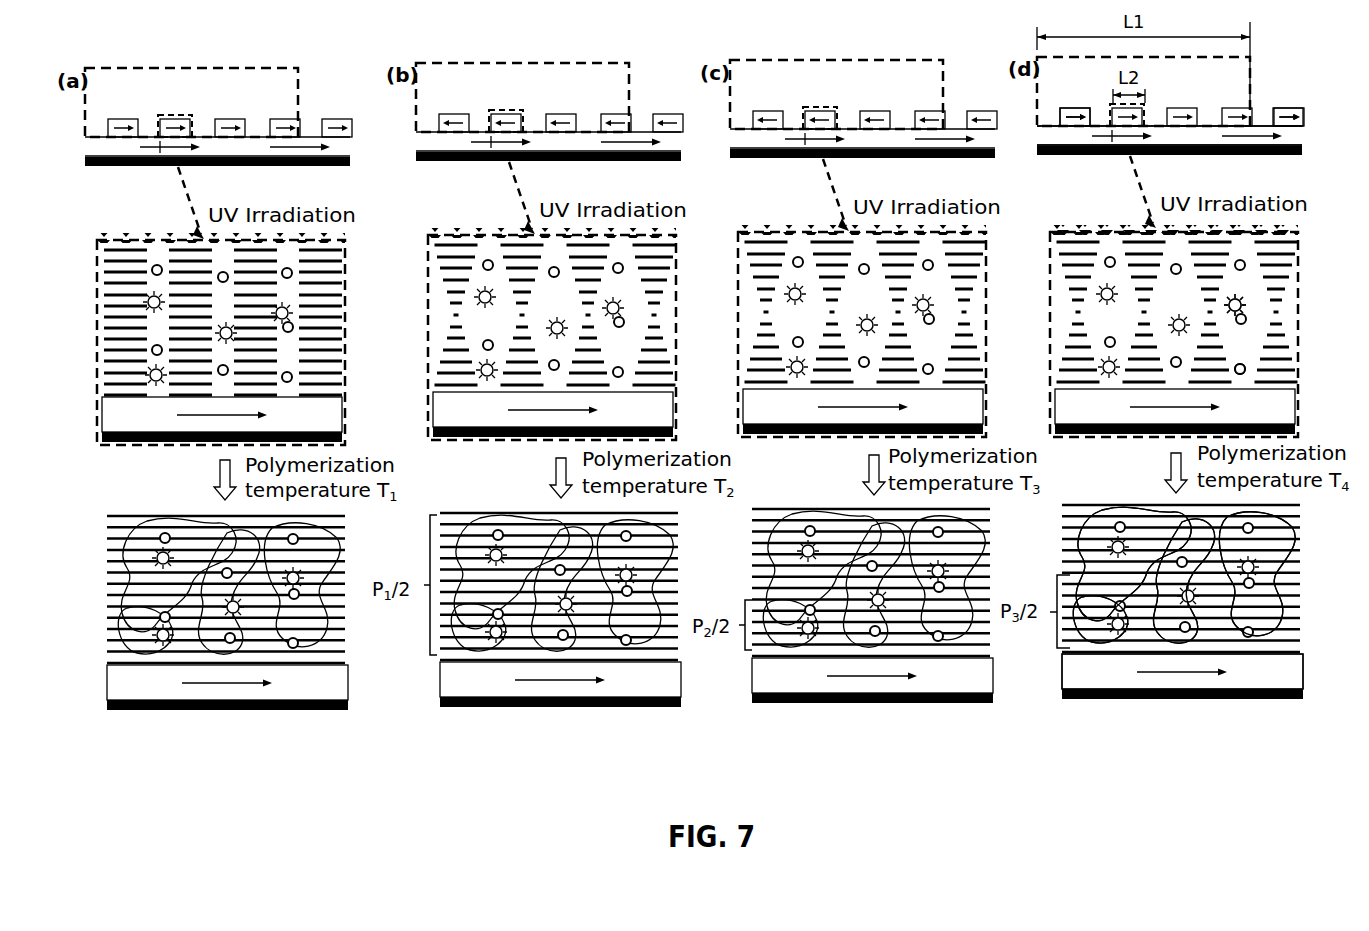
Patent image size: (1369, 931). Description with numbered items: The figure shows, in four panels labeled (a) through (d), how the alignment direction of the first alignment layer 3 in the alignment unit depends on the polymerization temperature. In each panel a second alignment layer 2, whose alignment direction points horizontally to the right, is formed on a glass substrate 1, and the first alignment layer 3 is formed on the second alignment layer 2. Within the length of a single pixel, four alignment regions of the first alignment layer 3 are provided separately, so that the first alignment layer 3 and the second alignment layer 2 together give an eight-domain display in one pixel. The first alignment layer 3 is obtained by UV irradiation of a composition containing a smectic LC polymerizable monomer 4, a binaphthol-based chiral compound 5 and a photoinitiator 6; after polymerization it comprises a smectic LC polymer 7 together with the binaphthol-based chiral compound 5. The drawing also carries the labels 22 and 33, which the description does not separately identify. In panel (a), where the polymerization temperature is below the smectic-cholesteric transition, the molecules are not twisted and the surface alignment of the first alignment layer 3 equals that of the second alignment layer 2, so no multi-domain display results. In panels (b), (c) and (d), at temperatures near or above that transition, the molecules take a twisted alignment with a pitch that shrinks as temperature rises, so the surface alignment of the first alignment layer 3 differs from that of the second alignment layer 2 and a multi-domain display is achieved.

The glass substrate 1 is at (1300, 692).
The second alignment layer 2 is at (1336, 125).
The common electrode layer 22 is at (1262, 152).
The first alignment layer 3 is at (1067, 118).
The branch electrode 33 is at (1283, 117).
The smectic LC polymerizable monomer 4 is at (1292, 229).
The binaphthol-based chiral compound 5 is at (1243, 298).
The photoinitiator 6 is at (1246, 365).
The smectic LC polymer 7 is at (1290, 512).